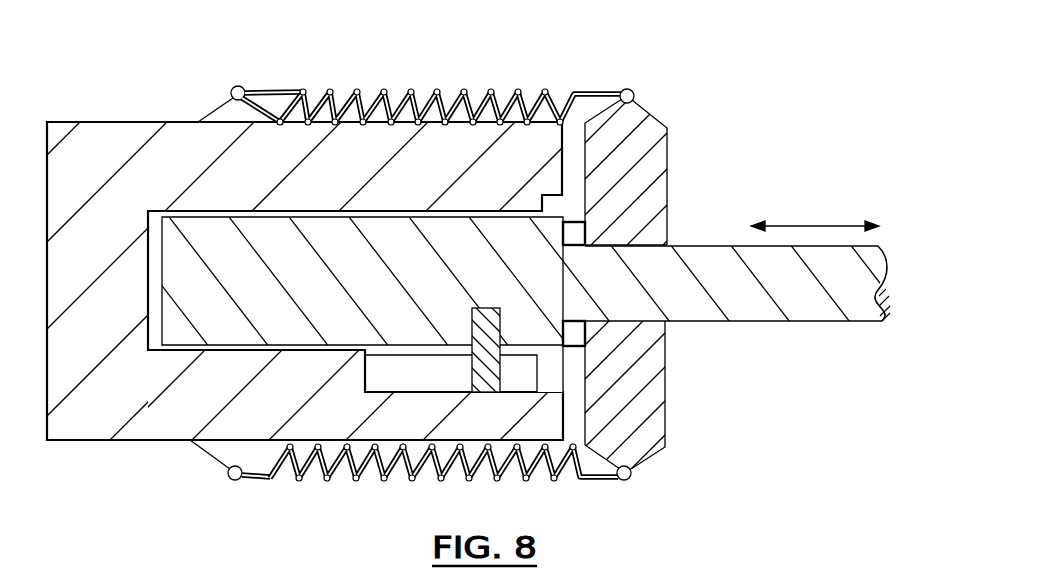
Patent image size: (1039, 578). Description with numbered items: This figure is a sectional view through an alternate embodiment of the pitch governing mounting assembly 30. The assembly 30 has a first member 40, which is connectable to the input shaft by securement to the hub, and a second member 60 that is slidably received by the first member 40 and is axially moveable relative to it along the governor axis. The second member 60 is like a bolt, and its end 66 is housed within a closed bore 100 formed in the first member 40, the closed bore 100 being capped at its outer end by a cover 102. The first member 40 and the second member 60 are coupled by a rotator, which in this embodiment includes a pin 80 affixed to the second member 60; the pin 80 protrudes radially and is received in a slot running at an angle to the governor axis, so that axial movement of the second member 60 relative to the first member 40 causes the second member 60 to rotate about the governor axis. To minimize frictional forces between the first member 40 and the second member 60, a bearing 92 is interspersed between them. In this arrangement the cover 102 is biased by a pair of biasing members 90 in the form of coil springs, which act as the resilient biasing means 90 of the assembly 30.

The pitch governing mounting assembly 30 is at (376, 66).
The first member 40 is at (144, 420).
The second member 60 is at (753, 297).
The end of the second member 66 is at (190, 240).
The pin 80 is at (483, 372).
The biasing means 90 is at (516, 90).
The bearing 92 is at (590, 333).
The closed bore 100 is at (570, 207).
The cover 102 is at (650, 408).